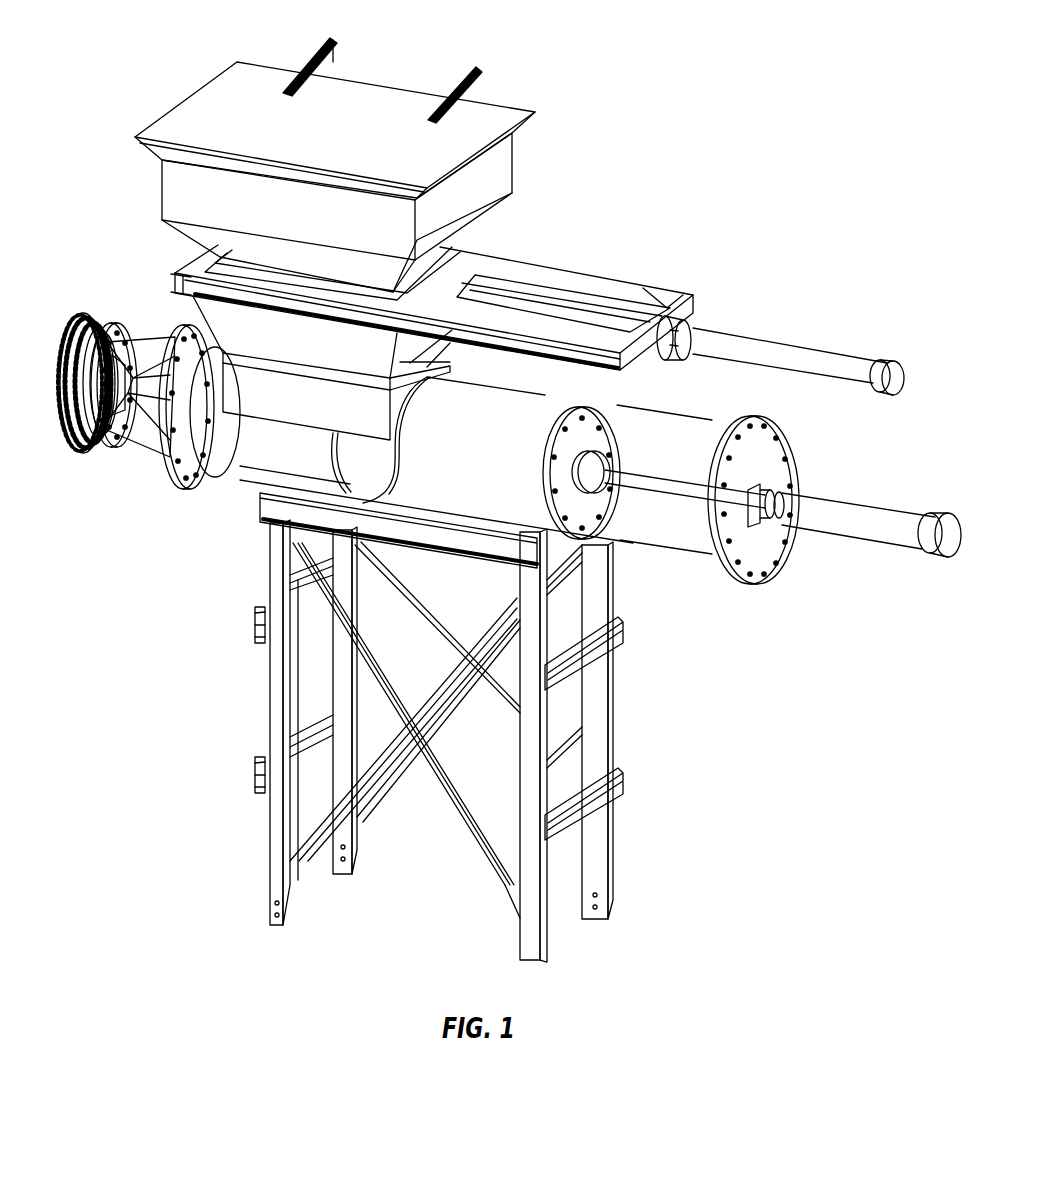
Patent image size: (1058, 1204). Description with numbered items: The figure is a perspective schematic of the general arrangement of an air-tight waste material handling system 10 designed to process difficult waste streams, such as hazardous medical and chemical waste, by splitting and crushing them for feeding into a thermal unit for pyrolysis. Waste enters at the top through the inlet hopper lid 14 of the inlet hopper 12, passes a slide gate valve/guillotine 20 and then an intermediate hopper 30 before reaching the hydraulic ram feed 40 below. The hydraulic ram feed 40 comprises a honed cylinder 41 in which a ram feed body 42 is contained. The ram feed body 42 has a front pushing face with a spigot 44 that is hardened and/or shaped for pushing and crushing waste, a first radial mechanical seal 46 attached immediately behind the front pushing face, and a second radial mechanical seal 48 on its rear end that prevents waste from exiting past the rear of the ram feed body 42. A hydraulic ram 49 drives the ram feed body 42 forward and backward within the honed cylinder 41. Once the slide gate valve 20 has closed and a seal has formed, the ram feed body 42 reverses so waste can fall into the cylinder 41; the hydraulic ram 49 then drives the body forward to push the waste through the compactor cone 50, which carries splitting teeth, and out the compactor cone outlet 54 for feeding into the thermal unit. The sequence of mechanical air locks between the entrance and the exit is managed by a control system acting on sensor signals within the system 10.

The waste material handling system 10 is at (690, 84).
The inlet hopper 12 is at (172, 183).
The inlet hopper lid 14 is at (388, 96).
The slide gate valve/guillotine 20 is at (708, 288).
The intermediate hopper 30 is at (310, 355).
The hydraulic ram feed 40 is at (700, 594).
The honed cylinder 41 is at (700, 462).
The ram feed body 42 is at (488, 435).
The spigot 44 is at (328, 448).
The first radial mechanical seal 46 is at (372, 452).
The second radial mechanical seal 48 is at (605, 433).
The hydraulic ram 49 is at (870, 515).
The compactor cone 50 is at (126, 313).
The compactor cone outlet 54 is at (49, 320).